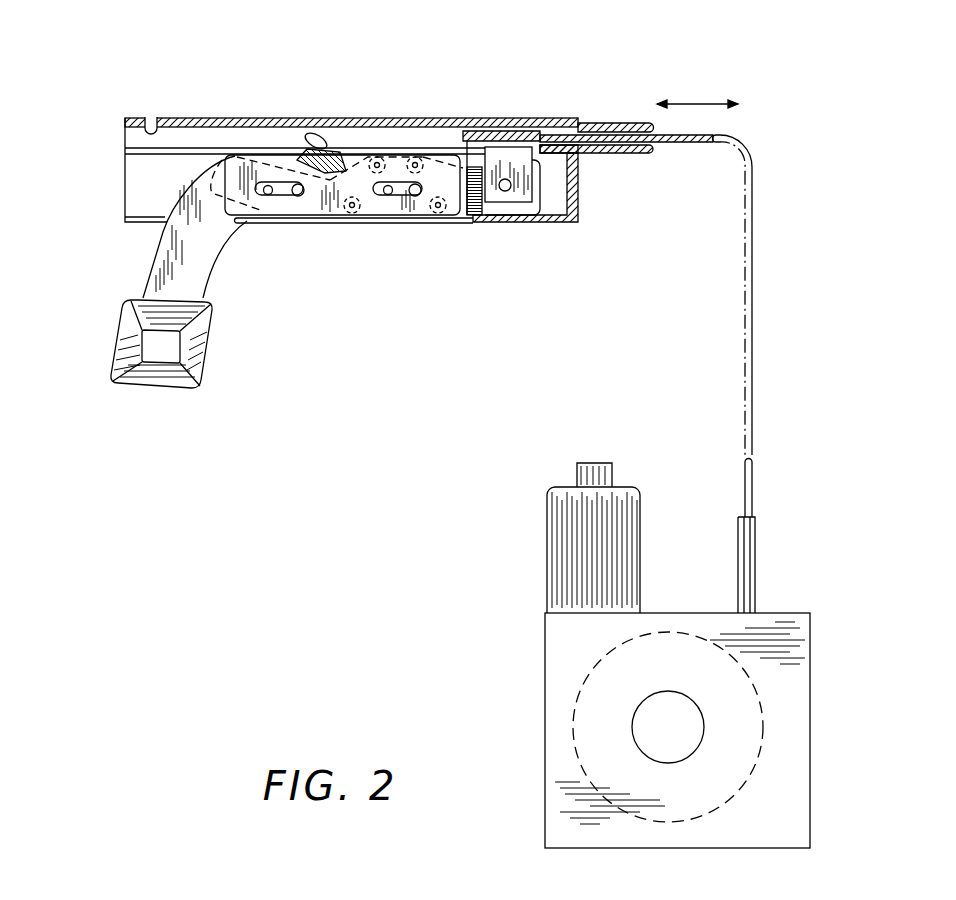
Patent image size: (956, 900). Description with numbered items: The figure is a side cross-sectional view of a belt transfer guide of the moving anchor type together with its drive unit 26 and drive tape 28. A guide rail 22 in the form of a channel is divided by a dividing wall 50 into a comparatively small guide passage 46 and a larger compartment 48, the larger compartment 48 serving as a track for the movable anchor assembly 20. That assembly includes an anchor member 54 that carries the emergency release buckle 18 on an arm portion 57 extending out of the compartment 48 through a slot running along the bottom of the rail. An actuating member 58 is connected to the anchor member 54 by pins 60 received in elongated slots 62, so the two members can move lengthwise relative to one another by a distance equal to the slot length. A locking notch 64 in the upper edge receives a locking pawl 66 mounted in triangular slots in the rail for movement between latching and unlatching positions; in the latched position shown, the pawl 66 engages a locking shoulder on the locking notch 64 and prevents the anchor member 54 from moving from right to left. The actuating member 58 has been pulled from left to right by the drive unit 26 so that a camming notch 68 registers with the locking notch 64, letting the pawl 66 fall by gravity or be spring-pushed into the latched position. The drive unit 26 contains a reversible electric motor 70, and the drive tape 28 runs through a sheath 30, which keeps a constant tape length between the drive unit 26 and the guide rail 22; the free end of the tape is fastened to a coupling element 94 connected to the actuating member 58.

The emergency release buckle 18 is at (125, 342).
The movable anchor assembly 20 is at (344, 224).
The guide rail 22 is at (414, 112).
The drive unit 26 is at (818, 657).
The drive tape 28 is at (633, 142).
The sheath 30 is at (603, 122).
The guide passage 46 is at (152, 131).
The compartment 48 is at (135, 216).
The dividing wall 50 is at (227, 147).
The anchor member 54 is at (190, 168).
The arm portion 57 is at (162, 258).
The actuating member 58 is at (472, 167).
The pins 60 is at (300, 195).
The elongated slots 62 is at (268, 194).
The locking notch 64 is at (307, 158).
The locking pawl 66 is at (323, 140).
The camming notch 68 is at (363, 163).
The reversible electric motor 70 is at (633, 522).
The coupling element 94 is at (520, 160).